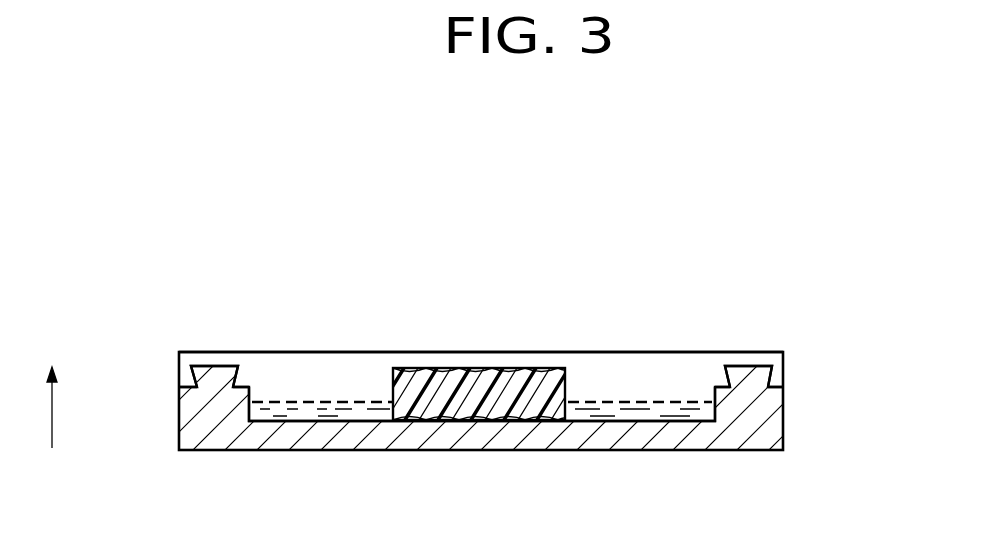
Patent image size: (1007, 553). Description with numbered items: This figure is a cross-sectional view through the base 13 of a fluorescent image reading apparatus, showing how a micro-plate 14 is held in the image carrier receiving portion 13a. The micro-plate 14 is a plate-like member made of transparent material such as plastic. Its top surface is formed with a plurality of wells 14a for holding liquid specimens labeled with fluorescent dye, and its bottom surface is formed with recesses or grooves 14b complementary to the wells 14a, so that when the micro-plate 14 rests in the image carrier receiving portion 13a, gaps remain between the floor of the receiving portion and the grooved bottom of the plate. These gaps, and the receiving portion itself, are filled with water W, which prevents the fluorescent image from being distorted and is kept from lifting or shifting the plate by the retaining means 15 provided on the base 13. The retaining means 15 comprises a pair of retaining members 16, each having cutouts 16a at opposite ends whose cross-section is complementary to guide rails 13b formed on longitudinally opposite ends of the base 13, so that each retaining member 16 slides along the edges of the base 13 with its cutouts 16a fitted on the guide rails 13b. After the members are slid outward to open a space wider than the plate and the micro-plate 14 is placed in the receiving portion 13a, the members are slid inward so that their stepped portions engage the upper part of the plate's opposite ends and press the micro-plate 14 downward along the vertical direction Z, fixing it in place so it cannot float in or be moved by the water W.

The base 13 is at (762, 425).
The image carrier receiving portion 13a is at (632, 390).
The guide rails 13b is at (207, 378).
The micro-plate 14 is at (393, 369).
The wells 14a is at (459, 373).
The recesses or grooves 14b is at (434, 414).
The retaining means 15 is at (583, 339).
The retaining member 16 is at (677, 363).
The cutouts 16a is at (212, 370).
The water W is at (320, 412).
The Z direction Z is at (39, 407).